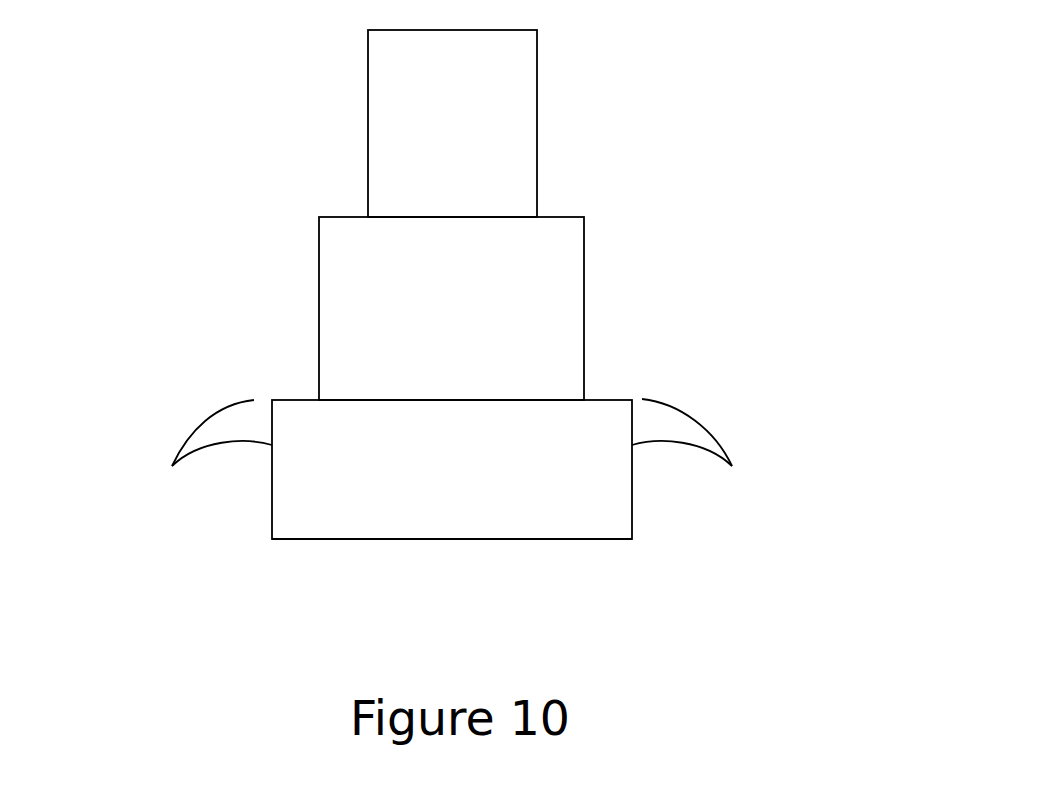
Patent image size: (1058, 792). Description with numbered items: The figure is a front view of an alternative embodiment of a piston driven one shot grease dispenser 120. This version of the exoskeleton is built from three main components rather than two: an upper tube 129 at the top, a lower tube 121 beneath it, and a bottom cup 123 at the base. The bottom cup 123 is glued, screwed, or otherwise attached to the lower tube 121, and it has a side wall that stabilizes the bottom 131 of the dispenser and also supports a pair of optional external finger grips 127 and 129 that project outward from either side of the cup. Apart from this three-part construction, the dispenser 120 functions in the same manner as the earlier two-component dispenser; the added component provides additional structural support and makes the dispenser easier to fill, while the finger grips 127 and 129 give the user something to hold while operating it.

The piston driven one shot grease dispenser 120 is at (722, 186).
The lower tube 121 is at (550, 358).
The bottom cup 123 is at (326, 512).
The finger grip 127 is at (459, 131).
The upper tube 129 is at (667, 427).
The bottom 131 is at (452, 539).